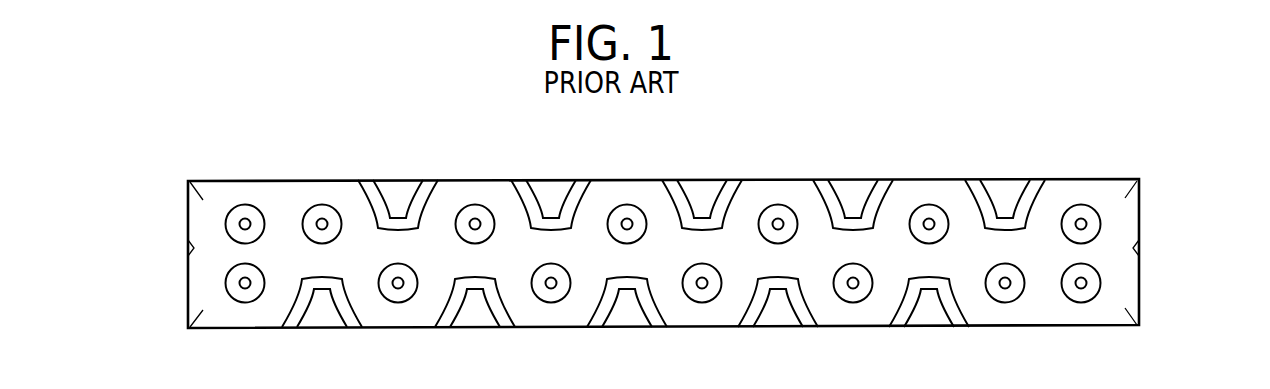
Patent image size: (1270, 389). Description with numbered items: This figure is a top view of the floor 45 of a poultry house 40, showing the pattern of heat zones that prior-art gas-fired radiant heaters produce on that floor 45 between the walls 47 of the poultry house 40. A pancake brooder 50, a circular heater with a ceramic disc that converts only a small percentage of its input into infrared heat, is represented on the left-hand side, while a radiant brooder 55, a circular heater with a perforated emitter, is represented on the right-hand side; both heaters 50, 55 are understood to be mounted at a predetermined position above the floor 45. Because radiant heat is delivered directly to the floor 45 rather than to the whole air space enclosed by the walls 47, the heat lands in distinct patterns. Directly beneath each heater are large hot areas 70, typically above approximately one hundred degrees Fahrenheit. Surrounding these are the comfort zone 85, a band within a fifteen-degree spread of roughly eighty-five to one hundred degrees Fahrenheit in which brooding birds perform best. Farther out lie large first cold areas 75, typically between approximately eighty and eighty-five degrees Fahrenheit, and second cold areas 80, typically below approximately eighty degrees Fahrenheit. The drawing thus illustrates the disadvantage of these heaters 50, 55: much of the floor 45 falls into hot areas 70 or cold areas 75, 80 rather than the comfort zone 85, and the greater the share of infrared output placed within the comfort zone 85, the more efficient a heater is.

The poultry house 40 is at (1170, 190).
The floor 45 is at (600, 205).
The walls 47 is at (648, 181).
The pancake brooder 50 is at (242, 228).
The radiant brooder 55 is at (927, 227).
The hot areas 70 is at (238, 207).
The first cold areas 75 is at (288, 181).
The second cold areas 80 is at (188, 181).
The comfort zone 85 is at (452, 192).